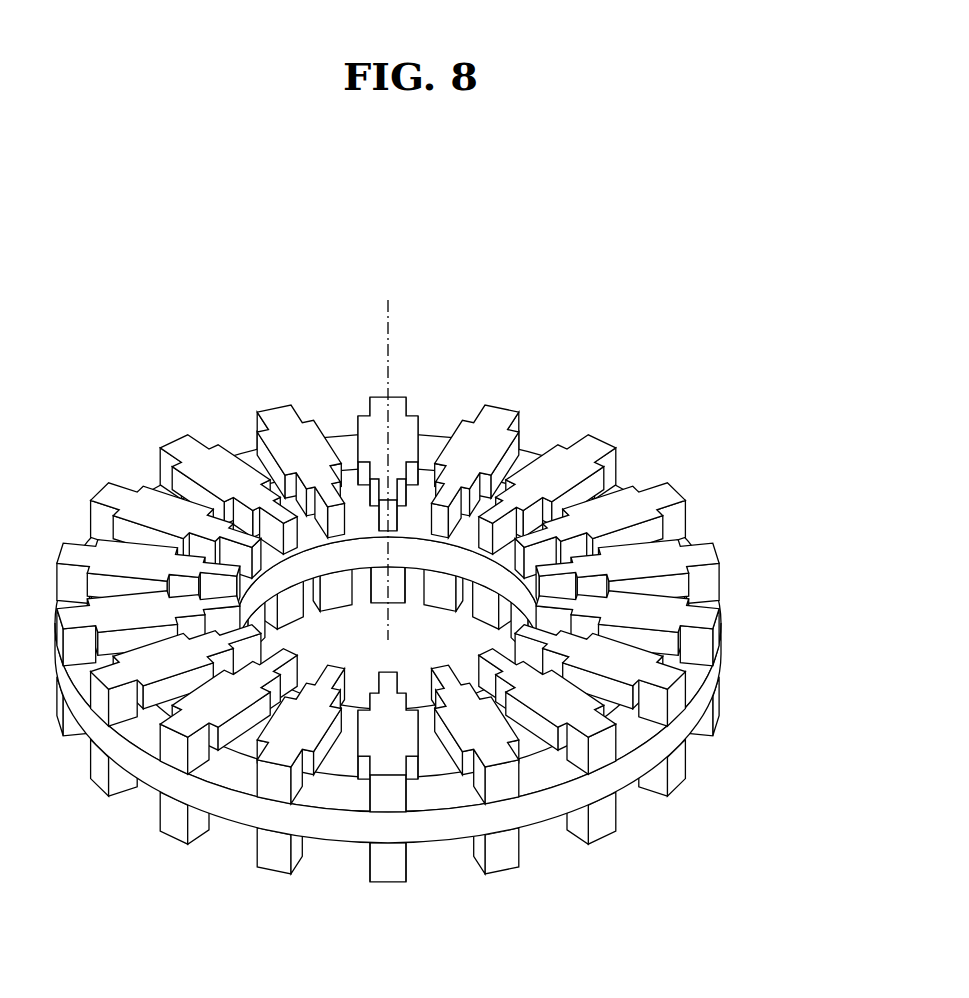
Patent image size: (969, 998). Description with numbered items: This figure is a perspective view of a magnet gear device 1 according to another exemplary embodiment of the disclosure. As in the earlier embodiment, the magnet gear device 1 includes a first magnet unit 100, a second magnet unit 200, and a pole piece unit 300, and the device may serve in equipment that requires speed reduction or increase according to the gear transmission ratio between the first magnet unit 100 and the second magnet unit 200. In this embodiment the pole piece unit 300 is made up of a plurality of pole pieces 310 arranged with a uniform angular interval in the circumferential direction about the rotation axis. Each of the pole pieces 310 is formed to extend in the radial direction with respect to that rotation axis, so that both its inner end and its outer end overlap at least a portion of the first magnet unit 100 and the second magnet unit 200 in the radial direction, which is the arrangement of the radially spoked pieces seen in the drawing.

The magnet gear device 1 is at (424, 578).
The first magnet unit 100 is at (343, 763).
The second magnet unit 200 is at (431, 851).
The pole piece unit 300 is at (605, 428).
The pole piece 310 is at (678, 697).